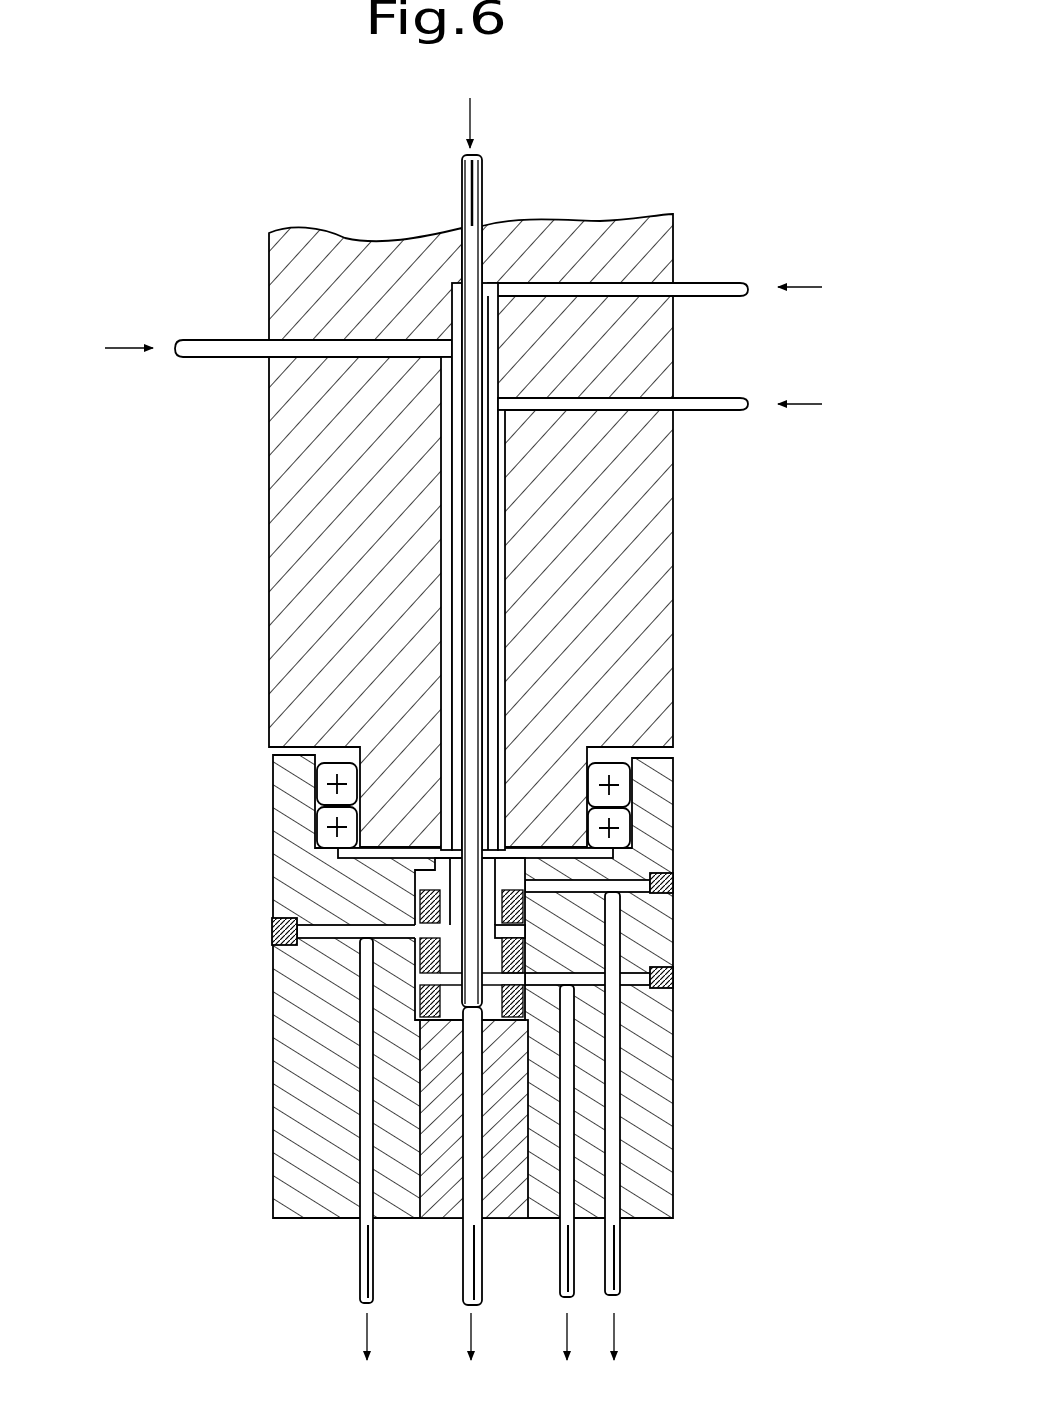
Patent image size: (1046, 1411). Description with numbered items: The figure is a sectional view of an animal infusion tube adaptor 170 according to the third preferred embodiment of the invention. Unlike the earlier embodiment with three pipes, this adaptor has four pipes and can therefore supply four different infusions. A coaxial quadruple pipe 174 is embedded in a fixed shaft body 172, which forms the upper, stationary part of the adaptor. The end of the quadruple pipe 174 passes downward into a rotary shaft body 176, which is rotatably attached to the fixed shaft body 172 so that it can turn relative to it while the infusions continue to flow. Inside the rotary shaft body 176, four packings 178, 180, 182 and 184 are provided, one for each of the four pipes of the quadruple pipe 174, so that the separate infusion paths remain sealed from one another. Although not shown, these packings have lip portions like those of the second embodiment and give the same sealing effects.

The animal infusion tube adaptor 170 is at (246, 227).
The fixed shaft body 172 is at (676, 548).
The coaxial quadruple pipe 174 is at (437, 575).
The rotary shaft body 176 is at (271, 1049).
The packing 178 is at (512, 858).
The packing 180 is at (540, 864).
The packing 182 is at (525, 957).
The packing 184 is at (525, 1003).